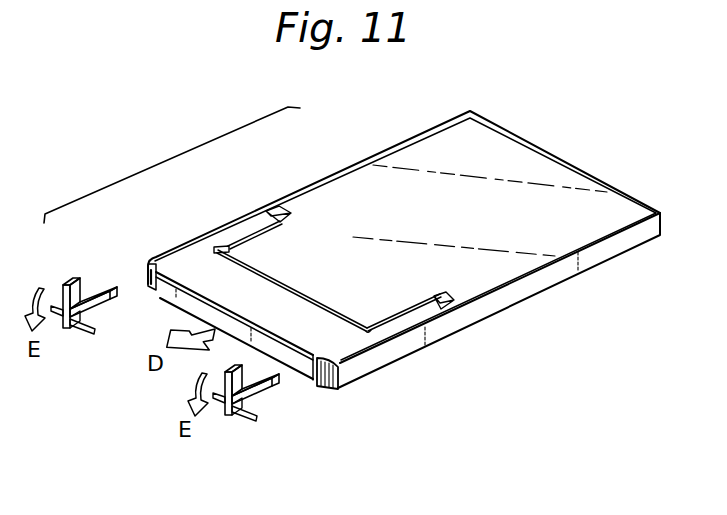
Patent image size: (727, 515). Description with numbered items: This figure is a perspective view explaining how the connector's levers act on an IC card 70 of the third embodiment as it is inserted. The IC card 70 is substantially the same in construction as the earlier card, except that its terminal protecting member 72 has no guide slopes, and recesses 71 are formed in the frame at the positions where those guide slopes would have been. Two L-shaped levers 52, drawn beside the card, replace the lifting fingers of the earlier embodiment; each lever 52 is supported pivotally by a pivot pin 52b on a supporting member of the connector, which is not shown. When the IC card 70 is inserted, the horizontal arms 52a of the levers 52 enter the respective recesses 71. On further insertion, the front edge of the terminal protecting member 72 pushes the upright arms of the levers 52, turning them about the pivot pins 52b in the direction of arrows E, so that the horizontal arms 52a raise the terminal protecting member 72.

The IC card 70 is at (482, 152).
The recesses 71 is at (153, 287).
The terminal protecting member 72 is at (323, 310).
The L-shaped lever 52 is at (73, 280).
The horizontal arm 52a is at (107, 290).
The pivot pin 52b is at (90, 330).